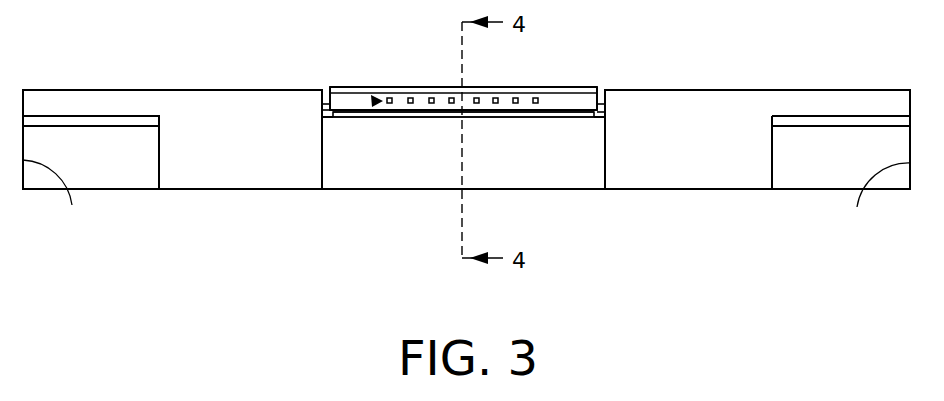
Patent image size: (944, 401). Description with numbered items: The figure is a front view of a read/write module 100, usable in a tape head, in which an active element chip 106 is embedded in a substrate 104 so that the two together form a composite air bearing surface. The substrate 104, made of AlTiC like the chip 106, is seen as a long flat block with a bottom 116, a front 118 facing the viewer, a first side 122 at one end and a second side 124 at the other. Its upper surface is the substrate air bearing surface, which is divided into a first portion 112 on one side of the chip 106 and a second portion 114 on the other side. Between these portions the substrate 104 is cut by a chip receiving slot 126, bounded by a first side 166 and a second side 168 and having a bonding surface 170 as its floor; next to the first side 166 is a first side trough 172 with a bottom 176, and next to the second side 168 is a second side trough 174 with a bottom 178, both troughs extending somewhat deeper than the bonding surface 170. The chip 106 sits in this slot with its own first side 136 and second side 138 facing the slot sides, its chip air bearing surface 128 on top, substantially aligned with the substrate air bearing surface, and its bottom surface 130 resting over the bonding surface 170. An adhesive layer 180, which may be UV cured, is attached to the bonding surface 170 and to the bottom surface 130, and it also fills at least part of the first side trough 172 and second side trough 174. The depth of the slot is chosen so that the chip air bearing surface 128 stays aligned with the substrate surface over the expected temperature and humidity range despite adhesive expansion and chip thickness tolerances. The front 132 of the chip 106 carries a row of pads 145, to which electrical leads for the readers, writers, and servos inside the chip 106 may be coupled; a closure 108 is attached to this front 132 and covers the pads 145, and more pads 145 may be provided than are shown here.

The module 100 is at (177, 243).
The substrate 104 is at (127, 100).
The chip 106 is at (338, 100).
The closure 108 is at (488, 92).
The first portion 112 is at (237, 90).
The second portion 114 is at (762, 92).
The bottom 116 is at (716, 191).
The front 118 is at (693, 112).
The first side 122 is at (57, 201).
The second side 124 is at (873, 201).
The chip receiving slot 126 is at (452, 114).
The chip air bearing surface 128 is at (437, 86).
The bottom surface 130 is at (425, 113).
The front 132 is at (553, 103).
The first side 136 is at (330, 102).
The second side 138 is at (604, 88).
The pads 145 is at (373, 101).
The first side 166 is at (322, 108).
The second side 168 is at (603, 108).
The bonding surface 170 is at (477, 117).
The first side trough 172 is at (322, 117).
The second side trough 174 is at (603, 118).
The bottom 176 is at (336, 119).
The bottom 178 is at (589, 119).
The adhesive layer 180 is at (603, 115).